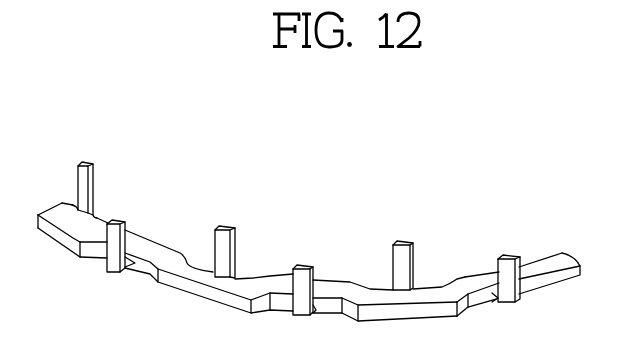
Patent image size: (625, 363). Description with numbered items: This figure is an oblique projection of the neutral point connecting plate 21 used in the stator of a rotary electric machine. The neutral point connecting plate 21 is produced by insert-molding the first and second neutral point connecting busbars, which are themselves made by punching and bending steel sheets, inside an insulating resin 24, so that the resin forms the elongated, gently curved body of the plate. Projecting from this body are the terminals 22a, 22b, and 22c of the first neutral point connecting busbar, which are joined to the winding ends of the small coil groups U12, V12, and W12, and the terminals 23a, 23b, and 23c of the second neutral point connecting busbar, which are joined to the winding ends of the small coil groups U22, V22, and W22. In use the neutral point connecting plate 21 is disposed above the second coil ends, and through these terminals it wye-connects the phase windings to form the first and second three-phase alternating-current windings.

The neutral point connecting plate 21 is at (283, 161).
The terminal of first neutral point connecting busbar 22a is at (101, 167).
The terminal of first neutral point connecting busbar 22b is at (120, 222).
The terminal of first neutral point connecting busbar 22c is at (232, 228).
The terminal of second neutral point connecting busbar 23a is at (307, 267).
The terminal of second neutral point connecting busbar 23b is at (411, 243).
The terminal of second neutral point connecting busbar 23c is at (513, 257).
The insulating resin 24 is at (462, 277).